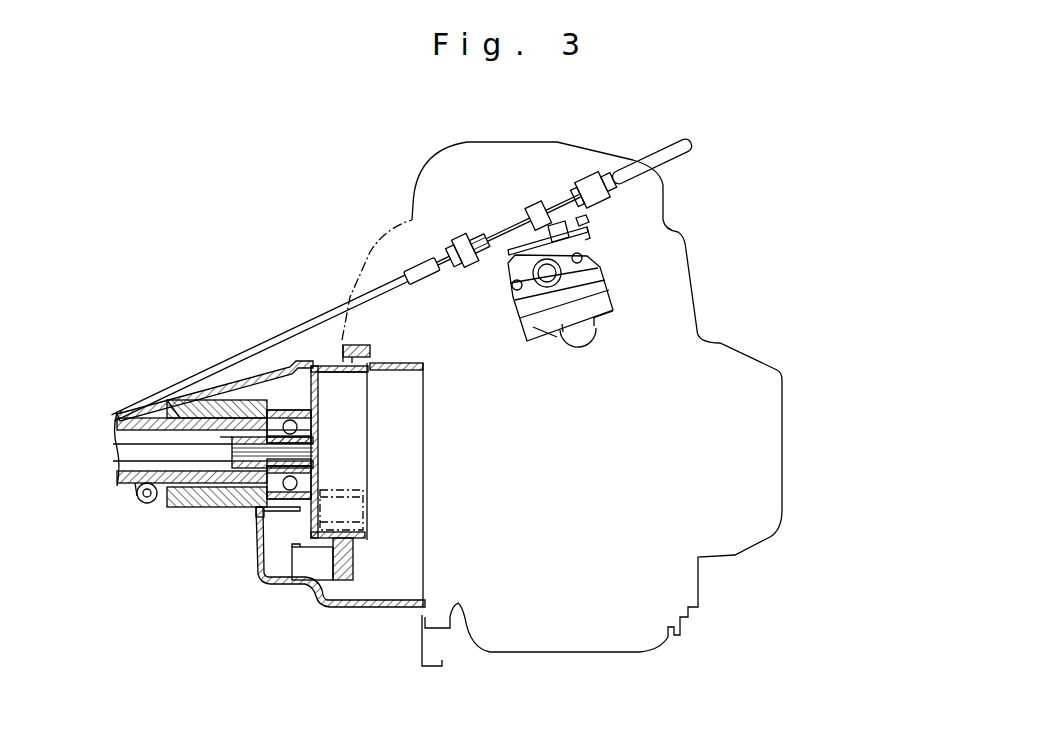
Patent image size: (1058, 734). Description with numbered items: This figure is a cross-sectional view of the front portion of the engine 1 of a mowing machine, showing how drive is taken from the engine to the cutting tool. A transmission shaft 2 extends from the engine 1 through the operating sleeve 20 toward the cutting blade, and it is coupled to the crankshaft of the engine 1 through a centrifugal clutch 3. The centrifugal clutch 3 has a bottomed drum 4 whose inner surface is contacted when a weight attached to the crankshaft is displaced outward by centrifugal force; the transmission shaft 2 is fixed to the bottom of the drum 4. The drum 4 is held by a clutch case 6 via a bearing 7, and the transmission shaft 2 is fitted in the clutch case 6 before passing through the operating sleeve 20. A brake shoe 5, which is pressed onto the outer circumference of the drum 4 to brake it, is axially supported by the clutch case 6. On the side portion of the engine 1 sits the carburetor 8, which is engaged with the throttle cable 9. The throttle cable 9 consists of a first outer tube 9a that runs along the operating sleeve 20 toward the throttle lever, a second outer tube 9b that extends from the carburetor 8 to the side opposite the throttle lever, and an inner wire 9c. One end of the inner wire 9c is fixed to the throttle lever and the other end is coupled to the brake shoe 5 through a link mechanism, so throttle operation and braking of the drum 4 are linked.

The engine 1 is at (688, 243).
The transmission shaft 2 is at (118, 471).
The centrifugal clutch 3 is at (368, 438).
The drum 4 is at (371, 351).
The brake shoe 5 is at (355, 486).
The clutch case 6 is at (310, 361).
The bearing 7 is at (283, 505).
The carburetor 8 is at (588, 357).
The throttle cable 9 is at (383, 283).
The first outer tube 9a is at (190, 378).
The second outer tube 9b is at (671, 146).
The inner wire 9c is at (503, 231).
The operating sleeve 20 is at (122, 482).